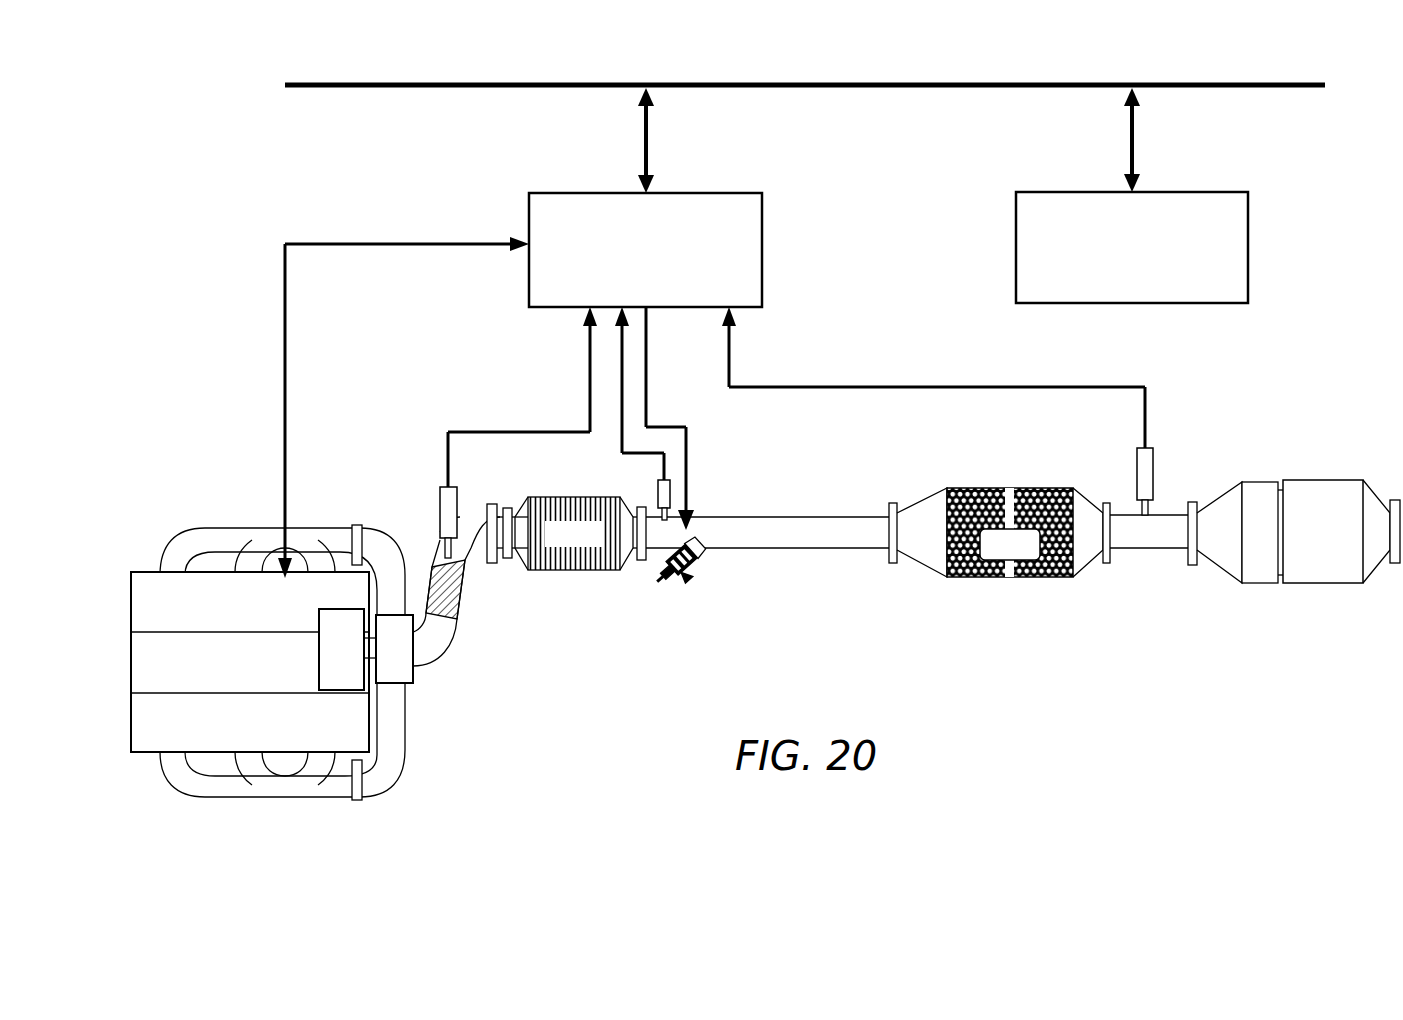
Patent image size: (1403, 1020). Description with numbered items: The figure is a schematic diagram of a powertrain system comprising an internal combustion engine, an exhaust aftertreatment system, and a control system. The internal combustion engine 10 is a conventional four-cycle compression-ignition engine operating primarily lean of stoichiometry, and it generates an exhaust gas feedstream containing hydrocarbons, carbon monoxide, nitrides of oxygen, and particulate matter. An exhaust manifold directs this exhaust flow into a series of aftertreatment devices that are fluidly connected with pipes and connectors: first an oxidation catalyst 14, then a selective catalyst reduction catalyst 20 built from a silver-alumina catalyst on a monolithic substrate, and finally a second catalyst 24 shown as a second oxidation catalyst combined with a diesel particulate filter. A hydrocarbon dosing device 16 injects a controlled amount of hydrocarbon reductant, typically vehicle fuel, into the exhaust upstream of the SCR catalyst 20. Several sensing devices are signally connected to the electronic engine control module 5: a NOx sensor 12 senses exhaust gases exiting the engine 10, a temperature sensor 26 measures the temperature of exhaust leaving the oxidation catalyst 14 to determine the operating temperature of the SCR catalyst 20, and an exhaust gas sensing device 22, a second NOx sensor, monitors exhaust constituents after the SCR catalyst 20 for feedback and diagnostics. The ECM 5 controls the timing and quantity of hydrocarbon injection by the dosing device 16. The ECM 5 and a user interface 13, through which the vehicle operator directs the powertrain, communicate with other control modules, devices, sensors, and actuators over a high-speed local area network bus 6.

The electronic engine control module 5 is at (714, 185).
The LAN bus 6 is at (1021, 95).
The internal combustion engine 10 is at (176, 538).
The NOx sensor 12 is at (433, 500).
The user interface 13 is at (1201, 185).
The oxidation catalyst 14 is at (575, 578).
The hydrocarbon dosing device 16 is at (680, 592).
The selective catalyst reduction catalyst 20 is at (982, 586).
The exhaust gas sensing device 22 is at (1167, 461).
The second catalyst 24 is at (1323, 592).
The temperature sensor 26 is at (648, 492).